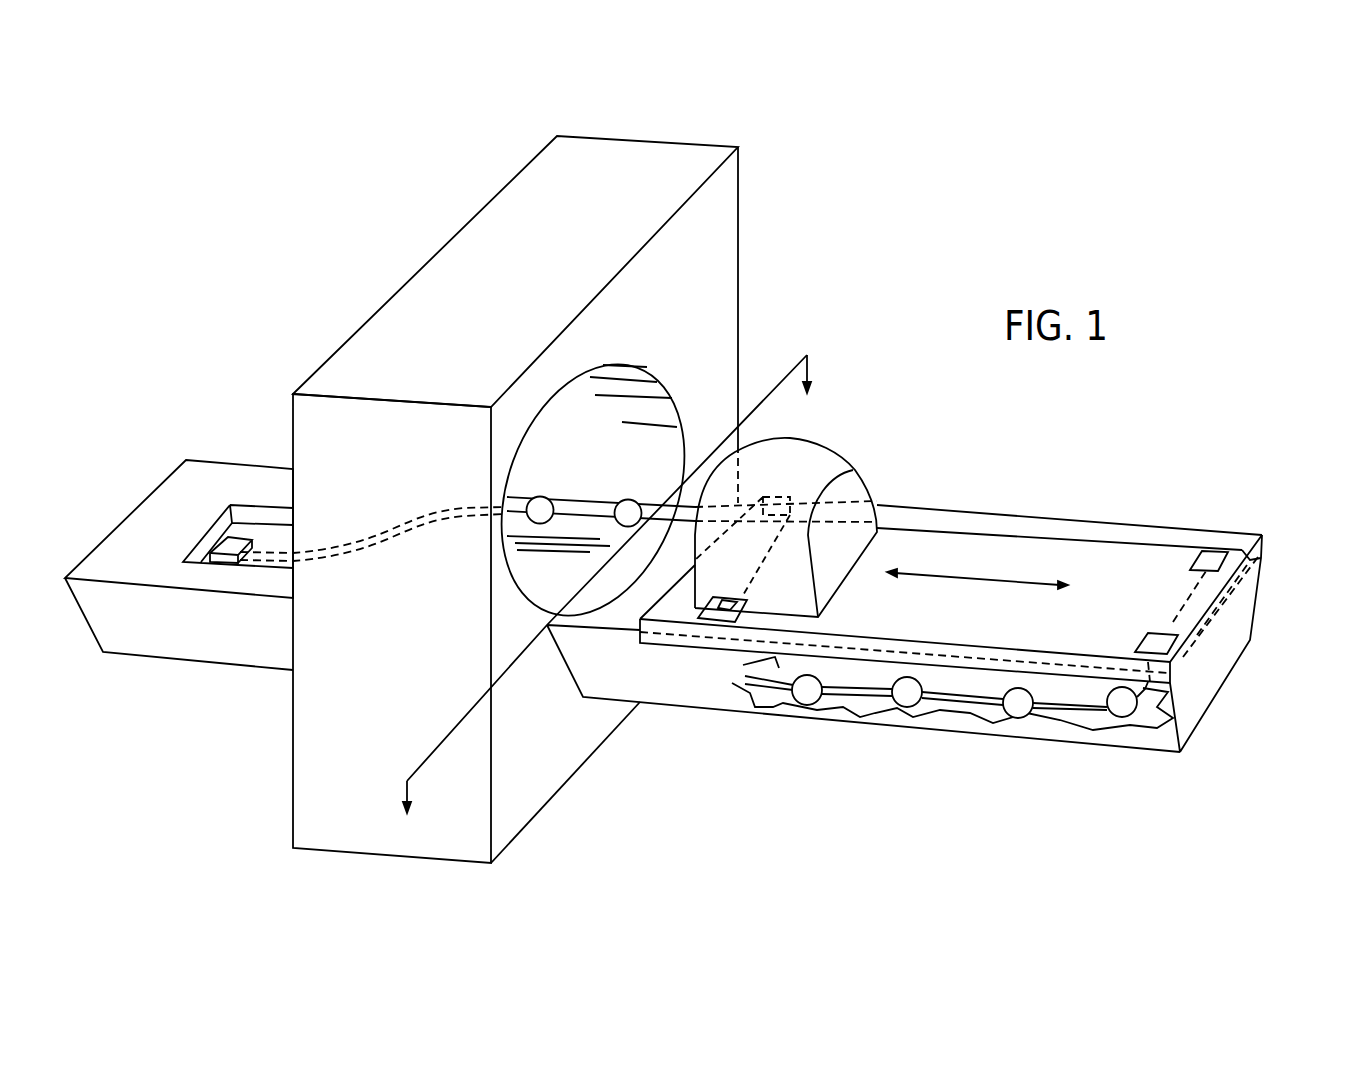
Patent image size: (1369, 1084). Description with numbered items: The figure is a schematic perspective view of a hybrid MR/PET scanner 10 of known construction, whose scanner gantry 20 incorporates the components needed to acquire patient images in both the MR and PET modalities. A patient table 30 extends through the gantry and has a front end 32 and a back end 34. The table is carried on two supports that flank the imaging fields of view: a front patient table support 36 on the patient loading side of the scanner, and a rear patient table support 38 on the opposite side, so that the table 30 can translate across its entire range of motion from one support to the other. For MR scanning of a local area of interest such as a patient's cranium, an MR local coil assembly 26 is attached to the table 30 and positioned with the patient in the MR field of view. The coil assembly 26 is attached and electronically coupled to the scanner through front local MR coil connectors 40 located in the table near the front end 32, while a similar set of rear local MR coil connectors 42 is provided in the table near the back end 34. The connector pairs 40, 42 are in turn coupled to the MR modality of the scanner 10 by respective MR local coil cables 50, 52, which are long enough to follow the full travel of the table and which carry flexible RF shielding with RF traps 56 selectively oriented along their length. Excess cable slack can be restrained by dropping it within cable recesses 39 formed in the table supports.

The hybrid MR/PET scanner 10 is at (800, 112).
The scanner gantry 20 is at (760, 235).
The MR local coil assembly 26 is at (887, 488).
The patient table 30 is at (1163, 558).
The front end 32 is at (637, 635).
The back end 34 is at (1255, 570).
The front patient table support 36 is at (1240, 700).
The rear patient table support 38 is at (186, 686).
The cable recesses 39 is at (262, 538).
The front local MR coil connectors 40 is at (790, 497).
The rear local MR coil connectors 42 is at (1208, 547).
The MR local coil cable 50 is at (572, 534).
The MR local coil cable 52 is at (882, 713).
The RF traps 56 is at (630, 499).